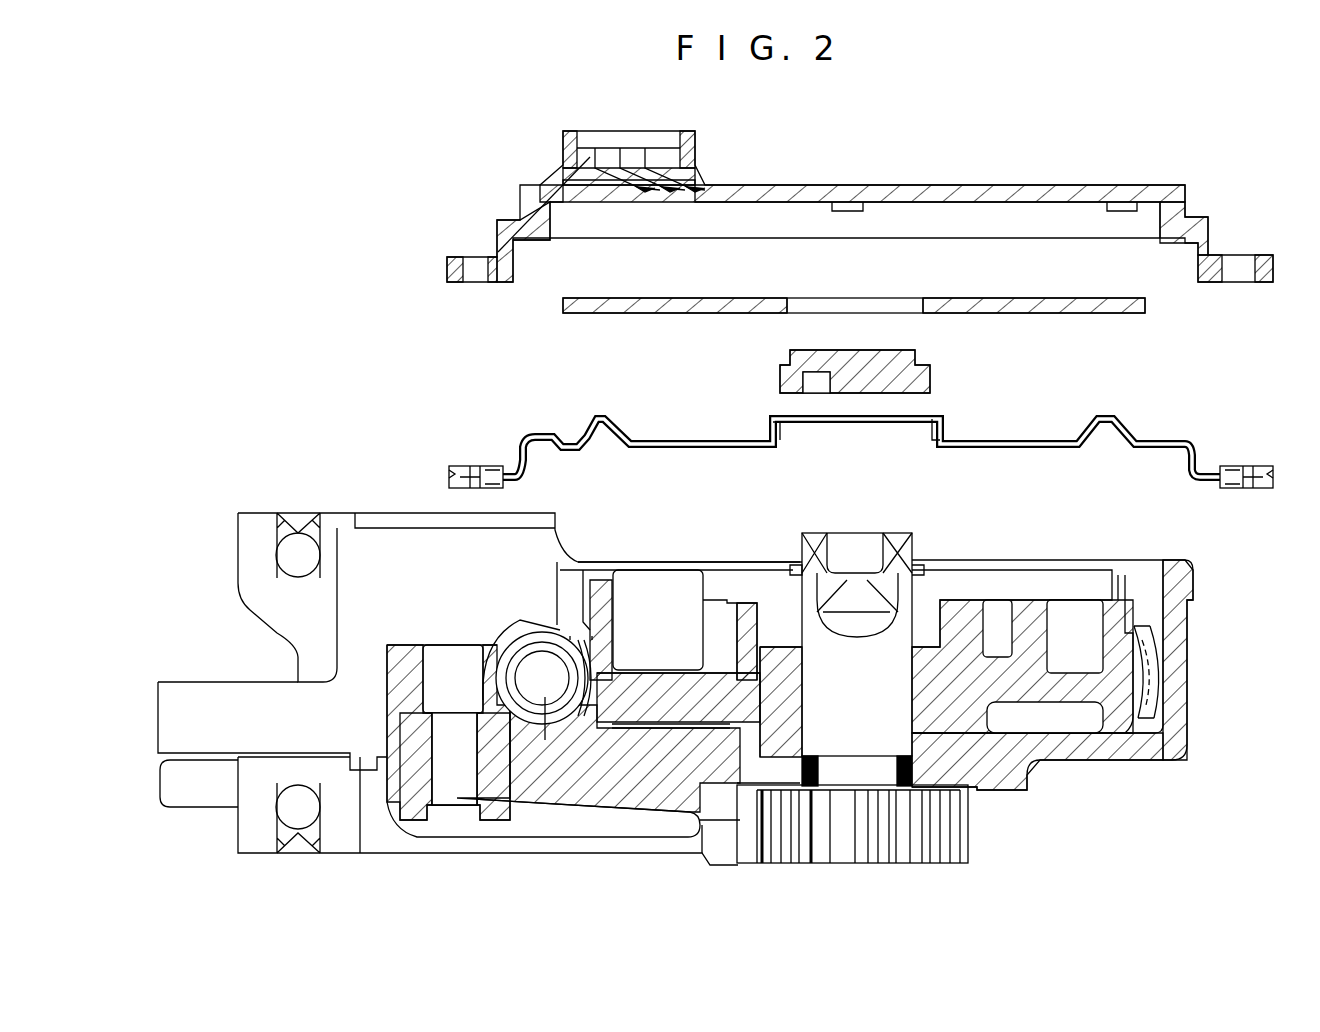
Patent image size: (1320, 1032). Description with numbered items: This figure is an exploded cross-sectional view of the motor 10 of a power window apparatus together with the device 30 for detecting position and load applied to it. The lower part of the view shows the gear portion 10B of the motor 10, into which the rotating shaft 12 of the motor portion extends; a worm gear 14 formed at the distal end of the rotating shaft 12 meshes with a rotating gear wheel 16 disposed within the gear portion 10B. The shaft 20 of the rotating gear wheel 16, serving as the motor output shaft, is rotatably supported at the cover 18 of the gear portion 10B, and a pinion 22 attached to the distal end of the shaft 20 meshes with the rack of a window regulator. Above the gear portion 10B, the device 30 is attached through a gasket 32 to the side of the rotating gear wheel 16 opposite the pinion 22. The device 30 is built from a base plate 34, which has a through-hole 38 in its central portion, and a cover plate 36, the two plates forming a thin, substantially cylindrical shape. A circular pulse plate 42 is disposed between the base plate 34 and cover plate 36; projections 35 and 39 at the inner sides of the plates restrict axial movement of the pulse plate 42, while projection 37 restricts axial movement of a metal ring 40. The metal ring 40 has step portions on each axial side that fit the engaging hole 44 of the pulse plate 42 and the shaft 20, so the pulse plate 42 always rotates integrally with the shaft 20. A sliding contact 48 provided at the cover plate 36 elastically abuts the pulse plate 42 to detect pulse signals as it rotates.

The motor 10 is at (480, 689).
The gear portion 10B is at (1195, 626).
The rotating shaft 12 is at (548, 705).
The worm gear 14 is at (580, 708).
The rotating gear wheel 16 is at (658, 730).
The cover 18 is at (1067, 762).
The shaft 20 is at (850, 730).
The pinion 22 is at (878, 867).
The device for detecting position and load 30 is at (385, 358).
The gasket 32 is at (1183, 455).
The base plate 34 is at (515, 452).
The projection 35 is at (597, 417).
The cover plate 36 is at (497, 218).
The projection 37 is at (848, 213).
The through-hole 38 is at (935, 416).
The projection 39 is at (1117, 213).
The metal ring 40 is at (780, 372).
The pulse plate 42 is at (1147, 310).
The engaging hole 44 is at (920, 312).
The sliding contact 48 is at (652, 215).